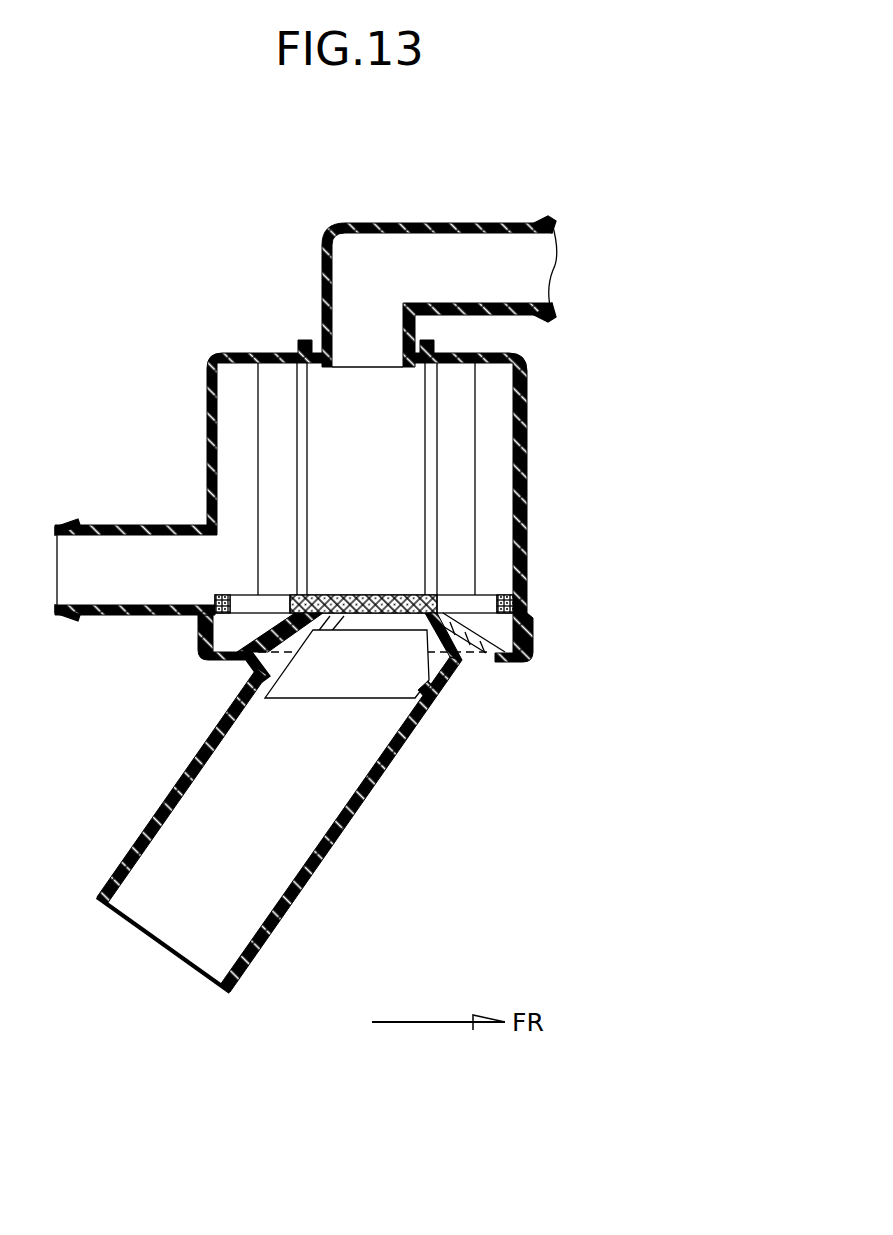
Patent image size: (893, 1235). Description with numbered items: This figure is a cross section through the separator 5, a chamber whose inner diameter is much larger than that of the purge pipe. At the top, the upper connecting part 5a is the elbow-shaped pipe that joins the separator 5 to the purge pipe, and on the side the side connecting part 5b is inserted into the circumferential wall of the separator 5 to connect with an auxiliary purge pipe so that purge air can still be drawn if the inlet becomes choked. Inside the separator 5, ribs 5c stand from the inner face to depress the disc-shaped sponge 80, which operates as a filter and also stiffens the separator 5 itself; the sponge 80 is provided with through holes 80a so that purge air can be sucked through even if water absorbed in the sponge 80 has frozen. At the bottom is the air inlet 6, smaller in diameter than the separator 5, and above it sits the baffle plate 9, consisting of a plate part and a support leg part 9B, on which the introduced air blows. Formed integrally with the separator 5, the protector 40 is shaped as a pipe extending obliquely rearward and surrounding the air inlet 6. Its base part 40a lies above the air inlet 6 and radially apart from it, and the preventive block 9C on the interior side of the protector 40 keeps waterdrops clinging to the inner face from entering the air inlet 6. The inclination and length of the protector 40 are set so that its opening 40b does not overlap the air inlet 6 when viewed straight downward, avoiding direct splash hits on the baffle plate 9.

The separator 5 is at (534, 396).
The upper connecting part 5a is at (449, 235).
The side connecting part 5b is at (122, 528).
The ribs 5c is at (265, 420).
The disc-shaped sponge 80 is at (385, 597).
The through hole 80a is at (242, 607).
The baffle plate 9 is at (342, 620).
The support leg part 9B is at (243, 665).
The preventive block 9C is at (420, 700).
The air inlet 6 is at (360, 688).
The protector 40 is at (322, 867).
The base part 40a is at (442, 698).
The opening 40b is at (187, 967).